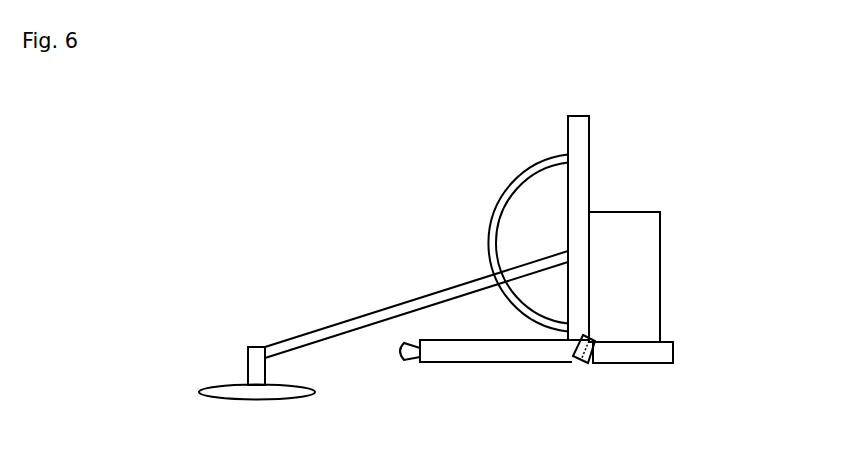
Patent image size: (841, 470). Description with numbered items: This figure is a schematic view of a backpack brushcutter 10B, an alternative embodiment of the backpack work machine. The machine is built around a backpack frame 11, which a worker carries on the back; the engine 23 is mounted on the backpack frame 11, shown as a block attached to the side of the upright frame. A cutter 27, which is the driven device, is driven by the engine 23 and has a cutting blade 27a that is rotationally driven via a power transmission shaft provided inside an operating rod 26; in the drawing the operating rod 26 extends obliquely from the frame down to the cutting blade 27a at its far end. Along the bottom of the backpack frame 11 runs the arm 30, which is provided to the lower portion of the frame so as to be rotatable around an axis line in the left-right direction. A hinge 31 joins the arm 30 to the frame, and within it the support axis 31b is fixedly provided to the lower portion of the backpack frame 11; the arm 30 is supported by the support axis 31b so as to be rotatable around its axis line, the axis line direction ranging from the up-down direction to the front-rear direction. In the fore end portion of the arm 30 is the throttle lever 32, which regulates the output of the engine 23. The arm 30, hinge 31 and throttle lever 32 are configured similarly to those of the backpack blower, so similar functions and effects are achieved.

The backpack brushcutter 10B is at (664, 121).
The backpack frame 11 is at (578, 137).
The engine 23 is at (632, 222).
The operating rod 26 is at (400, 303).
The cutter 27 is at (519, 121).
The cutting blade 27a is at (225, 388).
The arm 30 is at (488, 352).
The hinge 31 is at (588, 362).
The support axis 31b is at (580, 348).
The throttle lever 32 is at (407, 352).